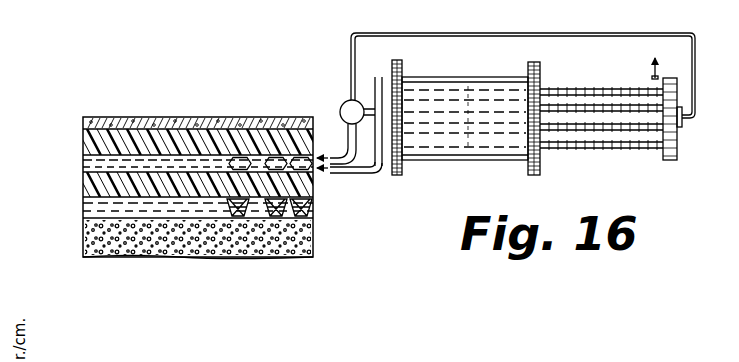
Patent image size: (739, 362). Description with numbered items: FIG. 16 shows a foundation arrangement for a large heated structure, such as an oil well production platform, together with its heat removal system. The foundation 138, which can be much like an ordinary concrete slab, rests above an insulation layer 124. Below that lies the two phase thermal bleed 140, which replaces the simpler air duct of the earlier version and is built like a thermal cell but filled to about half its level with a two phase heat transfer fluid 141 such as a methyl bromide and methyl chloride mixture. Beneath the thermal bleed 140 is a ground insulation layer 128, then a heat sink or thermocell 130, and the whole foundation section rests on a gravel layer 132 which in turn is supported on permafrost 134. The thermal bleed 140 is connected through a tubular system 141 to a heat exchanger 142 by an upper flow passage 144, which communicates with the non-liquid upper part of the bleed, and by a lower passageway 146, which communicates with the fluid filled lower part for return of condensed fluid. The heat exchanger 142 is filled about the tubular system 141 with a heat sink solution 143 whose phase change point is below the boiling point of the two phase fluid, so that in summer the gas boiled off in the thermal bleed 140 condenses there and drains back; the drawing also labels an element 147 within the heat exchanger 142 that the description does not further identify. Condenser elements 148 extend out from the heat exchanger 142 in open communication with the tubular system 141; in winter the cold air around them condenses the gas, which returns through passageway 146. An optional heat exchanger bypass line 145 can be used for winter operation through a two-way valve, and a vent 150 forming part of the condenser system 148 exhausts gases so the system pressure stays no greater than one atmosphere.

The insulation layer 124 is at (318, 117).
The ground insulation layer 128 is at (296, 181).
The thermocell 130 is at (298, 211).
The gravel layer 132 is at (309, 238).
The permafrost 134 is at (302, 259).
The foundation 138 is at (293, 117).
The two phase thermal bleed 140 is at (83, 160).
The tubular system 141 is at (83, 166).
The heat exchanger 142 is at (436, 77).
The heat sink solution 143 is at (480, 100).
The upper flow passage 144 is at (374, 77).
The heat exchanger bypass line 145 is at (420, 33).
The lower passageway 146 is at (380, 174).
The piston 147 is at (468, 130).
The condenser elements 148 is at (612, 128).
The vent 150 is at (656, 82).